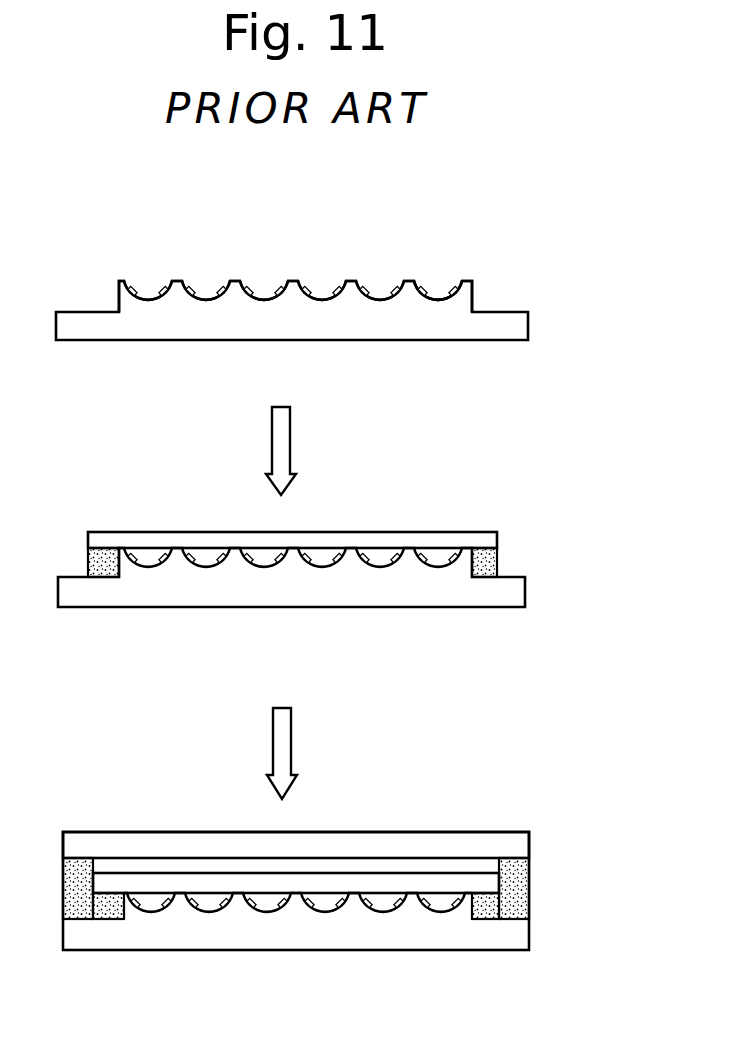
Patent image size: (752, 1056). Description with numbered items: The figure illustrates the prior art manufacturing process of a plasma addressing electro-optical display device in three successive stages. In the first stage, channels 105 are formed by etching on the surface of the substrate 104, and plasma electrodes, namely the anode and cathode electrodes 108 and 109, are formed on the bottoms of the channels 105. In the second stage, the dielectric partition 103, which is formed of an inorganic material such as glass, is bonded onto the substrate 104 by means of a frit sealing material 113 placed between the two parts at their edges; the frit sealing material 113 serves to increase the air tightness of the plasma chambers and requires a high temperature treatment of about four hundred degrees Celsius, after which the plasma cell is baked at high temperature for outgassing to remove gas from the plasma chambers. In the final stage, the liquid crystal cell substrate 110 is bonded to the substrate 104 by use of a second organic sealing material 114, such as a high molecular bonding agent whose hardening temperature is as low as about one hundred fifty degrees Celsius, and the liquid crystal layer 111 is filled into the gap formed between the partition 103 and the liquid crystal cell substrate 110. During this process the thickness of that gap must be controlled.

The dielectric partition 103 is at (458, 533).
The substrate 104 is at (512, 327).
The channels 105 is at (475, 290).
The anode electrode 108 is at (431, 291).
The cathode electrode 109 is at (441, 287).
The liquid crystal cell substrate 110 is at (503, 838).
The liquid crystal layer 111 is at (488, 866).
The frit sealing material 113 is at (497, 560).
The second organic sealing material 114 is at (512, 903).